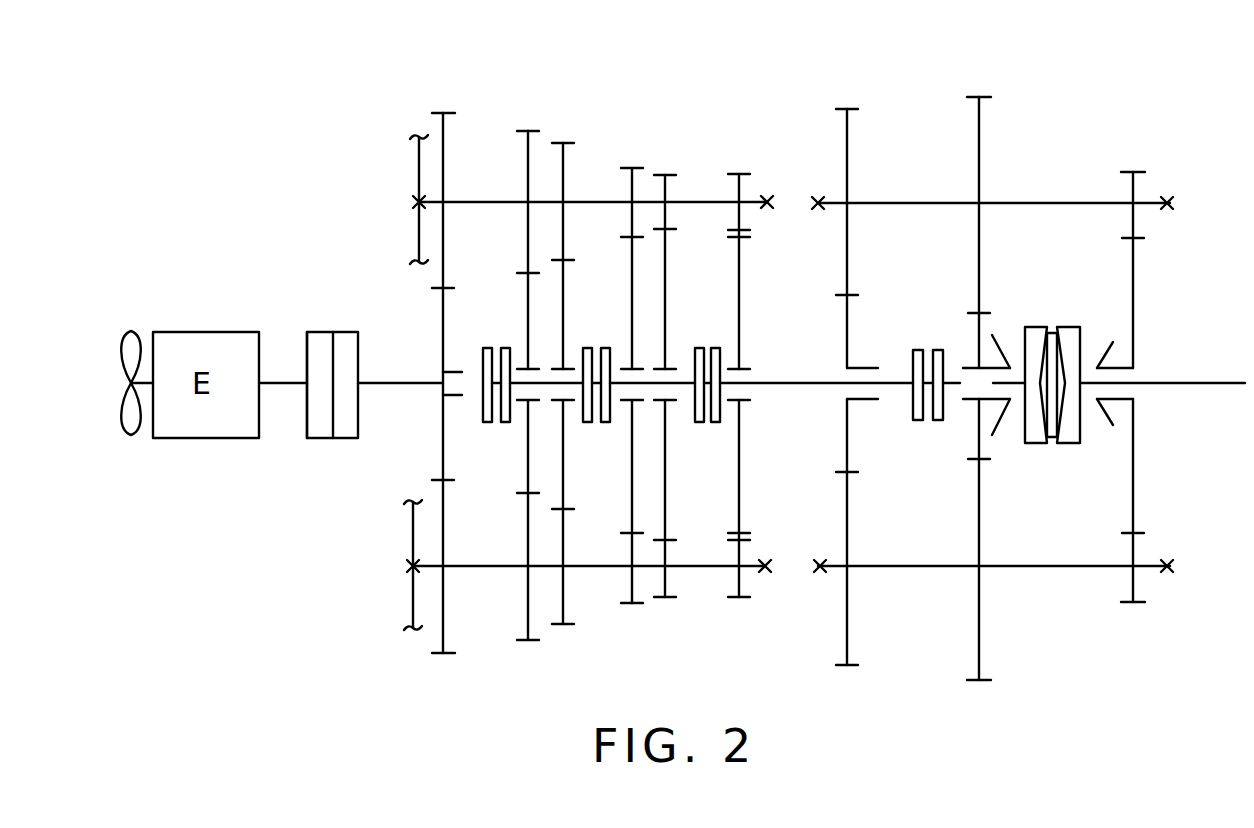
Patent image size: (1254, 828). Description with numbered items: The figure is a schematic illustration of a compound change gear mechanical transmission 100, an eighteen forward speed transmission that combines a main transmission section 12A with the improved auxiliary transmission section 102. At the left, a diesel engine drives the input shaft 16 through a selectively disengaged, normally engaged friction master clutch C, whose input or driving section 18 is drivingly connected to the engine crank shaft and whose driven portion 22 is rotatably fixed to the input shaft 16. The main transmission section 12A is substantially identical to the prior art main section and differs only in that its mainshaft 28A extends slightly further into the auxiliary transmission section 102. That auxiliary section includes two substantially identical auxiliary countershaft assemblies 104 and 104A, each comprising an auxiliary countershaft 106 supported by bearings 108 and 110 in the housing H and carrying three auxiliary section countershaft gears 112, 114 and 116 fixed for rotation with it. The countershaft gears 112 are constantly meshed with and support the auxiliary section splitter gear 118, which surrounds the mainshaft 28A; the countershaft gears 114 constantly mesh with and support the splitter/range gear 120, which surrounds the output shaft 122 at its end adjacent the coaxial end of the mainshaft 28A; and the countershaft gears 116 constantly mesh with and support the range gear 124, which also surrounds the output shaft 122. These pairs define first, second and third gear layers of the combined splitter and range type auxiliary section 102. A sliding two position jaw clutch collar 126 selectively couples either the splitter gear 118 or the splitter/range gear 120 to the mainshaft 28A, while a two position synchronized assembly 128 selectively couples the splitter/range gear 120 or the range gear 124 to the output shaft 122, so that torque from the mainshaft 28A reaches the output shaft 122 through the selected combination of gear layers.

The main transmission section 12A is at (624, 122).
The compound change gear mechanical transmission 100 is at (781, 88).
The auxiliary transmission section 102 is at (1048, 80).
The input shaft 16 is at (405, 381).
The driving section 18 is at (321, 427).
The driven portion 22 is at (344, 427).
The mainshaft 28A is at (798, 385).
The auxiliary countershaft assembly 104 is at (1050, 194).
The auxiliary countershaft assembly 104A is at (1010, 602).
The auxiliary countershaft 106 is at (890, 203).
The bearing 108 is at (818, 200).
The bearing 110 is at (1173, 200).
The auxiliary section countershaft gear 112 is at (847, 145).
The auxiliary section countershaft gear 114 is at (979, 147).
The auxiliary section countershaft gear 116 is at (1133, 185).
The auxiliary section splitter gear 118 is at (847, 333).
The auxiliary section splitter/range gear 120 is at (975, 330).
The output shaft 122 is at (1193, 384).
The auxiliary section range gear 124 is at (1133, 315).
The sliding two position jaw clutch collar 126 is at (917, 422).
The two position synchronized assembly 128 is at (1035, 316).
The housing H is at (419, 171).
The friction master clutch C is at (331, 324).